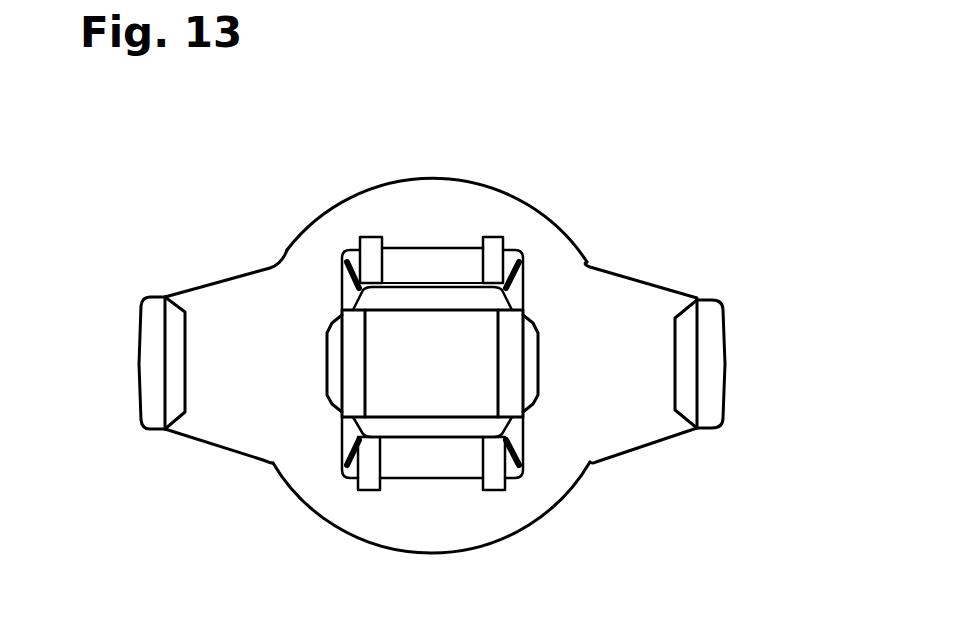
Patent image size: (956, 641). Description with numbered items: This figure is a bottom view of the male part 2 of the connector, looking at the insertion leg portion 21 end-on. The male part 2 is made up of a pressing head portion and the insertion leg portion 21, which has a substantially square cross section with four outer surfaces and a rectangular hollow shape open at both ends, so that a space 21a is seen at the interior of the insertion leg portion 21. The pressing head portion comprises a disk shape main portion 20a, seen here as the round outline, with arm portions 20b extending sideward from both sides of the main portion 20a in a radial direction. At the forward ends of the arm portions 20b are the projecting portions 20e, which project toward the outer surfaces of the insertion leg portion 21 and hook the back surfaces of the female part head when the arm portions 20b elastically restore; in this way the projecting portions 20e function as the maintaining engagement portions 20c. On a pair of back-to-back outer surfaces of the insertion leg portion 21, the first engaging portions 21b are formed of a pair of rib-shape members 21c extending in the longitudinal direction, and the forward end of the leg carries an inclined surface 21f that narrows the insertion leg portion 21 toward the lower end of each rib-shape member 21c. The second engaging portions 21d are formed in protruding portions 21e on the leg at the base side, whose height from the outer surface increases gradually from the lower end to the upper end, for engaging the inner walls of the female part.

The male part 2 is at (512, 172).
The main portion 20a is at (540, 206).
The arm portions 20b is at (217, 363).
The maintaining engagement portions 20c is at (173, 337).
The projecting portions 20e is at (687, 330).
The insertion leg portion 21 is at (400, 248).
The space 21a is at (382, 377).
The first engaging portions 21b is at (368, 252).
The rib-shape members 21c is at (505, 238).
The second engaging portions 21d is at (330, 355).
The protruding portions 21e is at (545, 362).
The inclined surface 21f is at (437, 267).